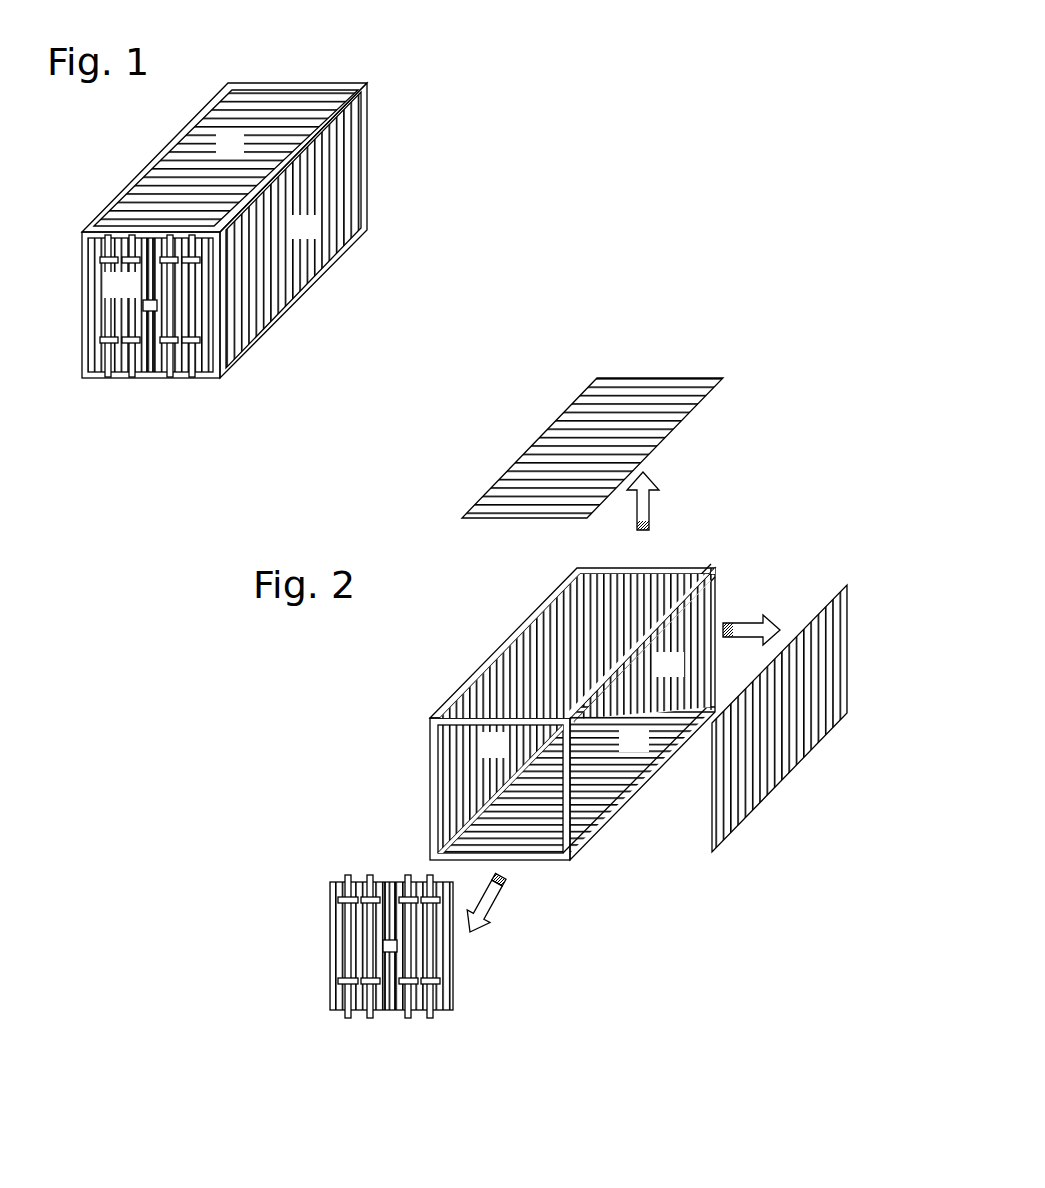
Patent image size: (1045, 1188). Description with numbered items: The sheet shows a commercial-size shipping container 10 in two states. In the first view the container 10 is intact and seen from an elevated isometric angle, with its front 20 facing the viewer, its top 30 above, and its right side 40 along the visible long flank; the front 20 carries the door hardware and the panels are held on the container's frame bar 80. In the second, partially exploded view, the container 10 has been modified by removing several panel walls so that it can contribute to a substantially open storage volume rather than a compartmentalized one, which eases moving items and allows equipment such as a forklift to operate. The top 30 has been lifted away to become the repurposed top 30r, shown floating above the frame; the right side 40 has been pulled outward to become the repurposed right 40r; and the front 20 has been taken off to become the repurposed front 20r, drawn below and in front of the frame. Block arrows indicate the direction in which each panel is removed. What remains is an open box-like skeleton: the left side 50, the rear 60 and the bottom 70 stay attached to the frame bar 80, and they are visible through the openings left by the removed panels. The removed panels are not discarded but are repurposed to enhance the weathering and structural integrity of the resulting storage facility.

In FIG. 1, the container 10 is at (244, 46).
In FIG. 1, the front 20 is at (133, 297).
In FIG. 1, the top 30 is at (242, 154).
In FIG. 1, the right side 40 is at (314, 237).
In FIG. 1, the frame bar 80 is at (297, 300).
In FIG. 2, the frame bar 80 is at (628, 800).
In FIG. 2, the repurposed top 30r is at (683, 415).
In FIG. 2, the repurposed right 40r is at (755, 810).
In FIG. 2, the repurposed front 20r is at (455, 947).
In FIG. 2, the left side 50 is at (504, 756).
In FIG. 2, the rear 60 is at (680, 675).
In FIG. 2, the bottom 70 is at (645, 750).